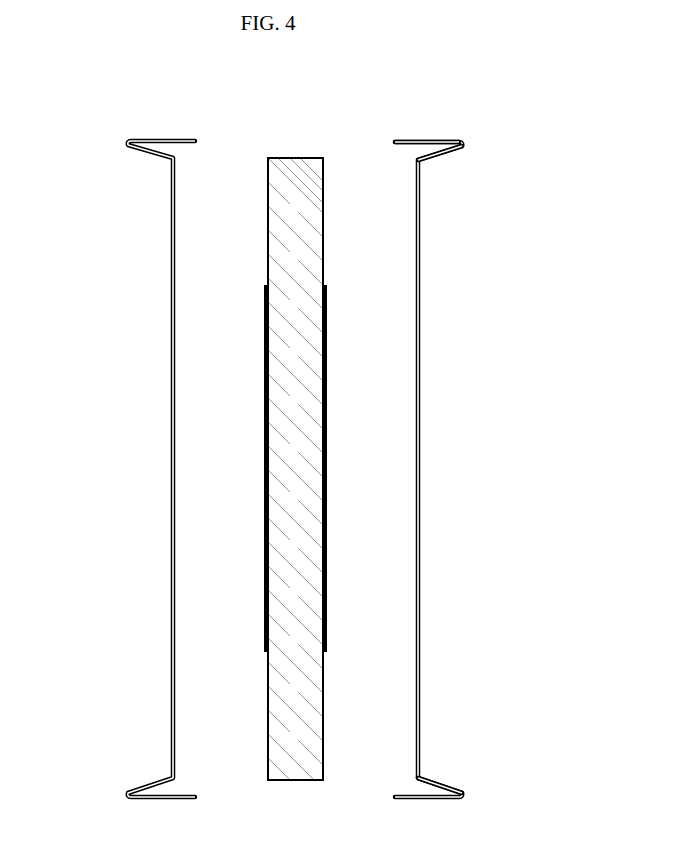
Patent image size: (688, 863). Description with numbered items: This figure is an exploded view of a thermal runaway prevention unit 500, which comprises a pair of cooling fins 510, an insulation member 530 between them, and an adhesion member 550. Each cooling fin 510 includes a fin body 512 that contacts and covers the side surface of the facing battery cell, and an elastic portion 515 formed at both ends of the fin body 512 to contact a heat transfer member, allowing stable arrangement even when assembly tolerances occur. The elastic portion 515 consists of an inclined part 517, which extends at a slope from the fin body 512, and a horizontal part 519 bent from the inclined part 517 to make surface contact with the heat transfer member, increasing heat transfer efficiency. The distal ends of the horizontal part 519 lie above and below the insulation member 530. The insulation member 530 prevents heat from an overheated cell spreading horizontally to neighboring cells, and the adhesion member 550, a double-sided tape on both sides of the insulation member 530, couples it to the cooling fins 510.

The thermal runaway prevention unit 500 is at (92, 135).
The cooling fin 510 is at (147, 384).
The fin body 512 is at (420, 405).
The elastic portion 515 is at (448, 769).
The inclined part 517 is at (440, 156).
The horizontal part 519 is at (429, 140).
The insulation member 530 is at (293, 782).
The adhesion member 550 is at (265, 468).